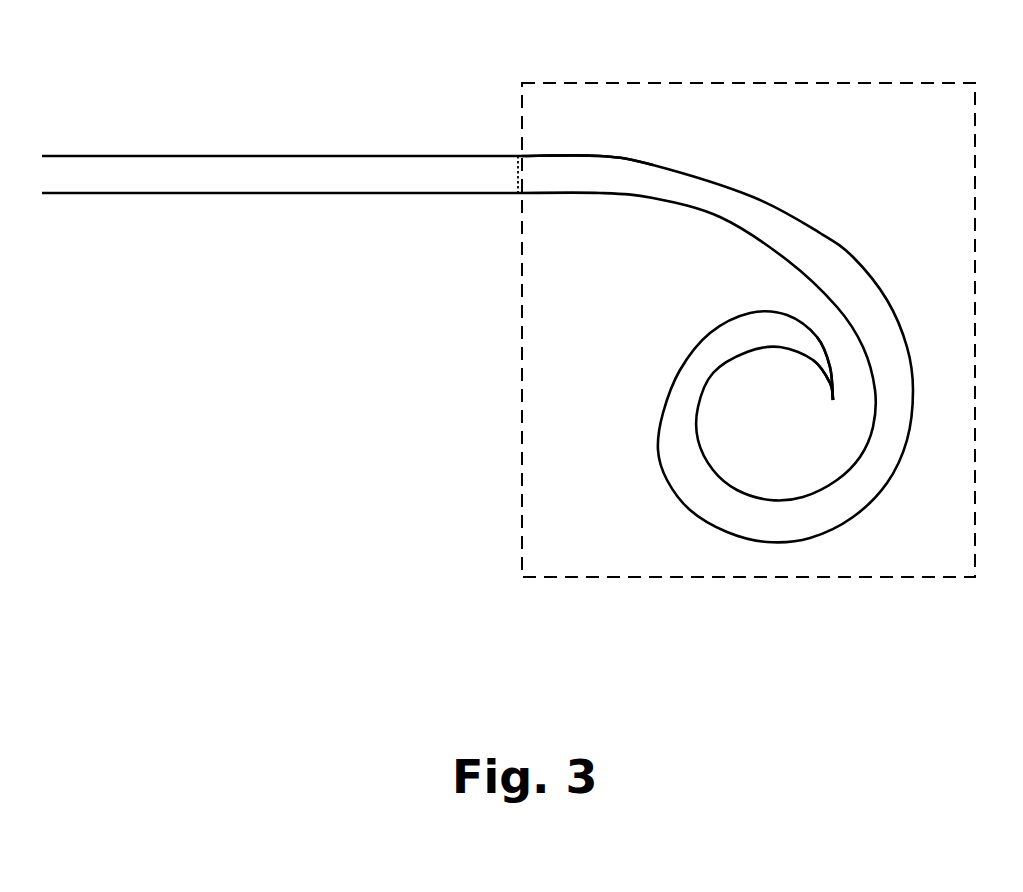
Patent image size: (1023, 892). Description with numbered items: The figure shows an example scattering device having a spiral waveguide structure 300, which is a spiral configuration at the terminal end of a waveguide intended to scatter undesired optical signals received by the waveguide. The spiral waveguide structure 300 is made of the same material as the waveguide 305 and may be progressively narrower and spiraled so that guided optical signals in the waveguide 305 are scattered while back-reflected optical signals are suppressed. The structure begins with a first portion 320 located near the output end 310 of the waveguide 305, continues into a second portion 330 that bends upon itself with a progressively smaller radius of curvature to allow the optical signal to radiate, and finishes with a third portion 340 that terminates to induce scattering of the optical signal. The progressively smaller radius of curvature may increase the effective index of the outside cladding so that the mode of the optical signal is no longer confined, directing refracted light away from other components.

The spiral waveguide structure 300 is at (591, 68).
The waveguide 305 is at (331, 153).
The output end 310 is at (516, 151).
The first portion 320 is at (558, 153).
The second portion 330 is at (851, 251).
The third portion 340 is at (826, 395).